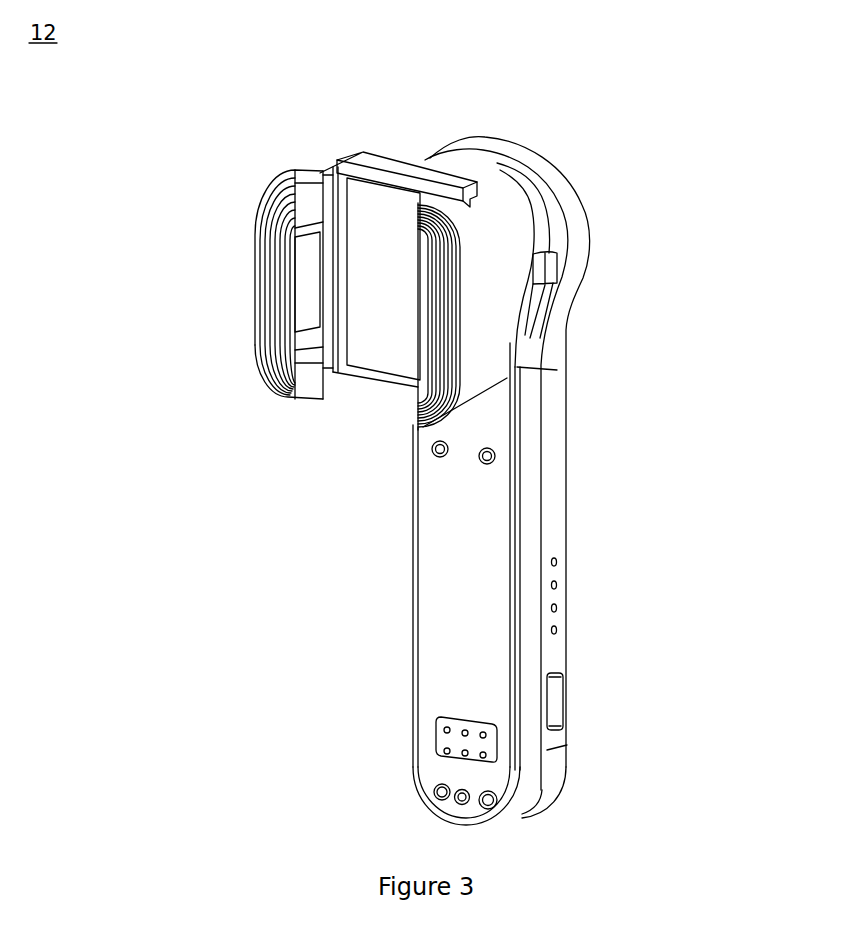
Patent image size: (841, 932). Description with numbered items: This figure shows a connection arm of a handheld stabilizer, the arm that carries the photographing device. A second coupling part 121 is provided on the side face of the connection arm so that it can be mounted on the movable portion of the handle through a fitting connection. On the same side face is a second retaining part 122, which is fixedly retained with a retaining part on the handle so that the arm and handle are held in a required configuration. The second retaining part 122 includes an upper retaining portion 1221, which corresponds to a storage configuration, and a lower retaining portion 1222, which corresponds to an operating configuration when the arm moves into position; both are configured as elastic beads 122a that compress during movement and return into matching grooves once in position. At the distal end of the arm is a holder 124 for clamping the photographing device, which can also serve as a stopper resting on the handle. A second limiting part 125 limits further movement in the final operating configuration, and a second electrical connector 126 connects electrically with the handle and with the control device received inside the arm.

The second coupling part 121 is at (516, 523).
The second retaining part 122 is at (250, 481).
The upper retaining portion 1221 is at (437, 453).
The lower retaining portion 1222 is at (442, 787).
The elastic bead 122a is at (492, 449).
The holder 124 is at (277, 278).
The second limiting part 125 is at (466, 793).
The second electrical connector 126 is at (484, 737).